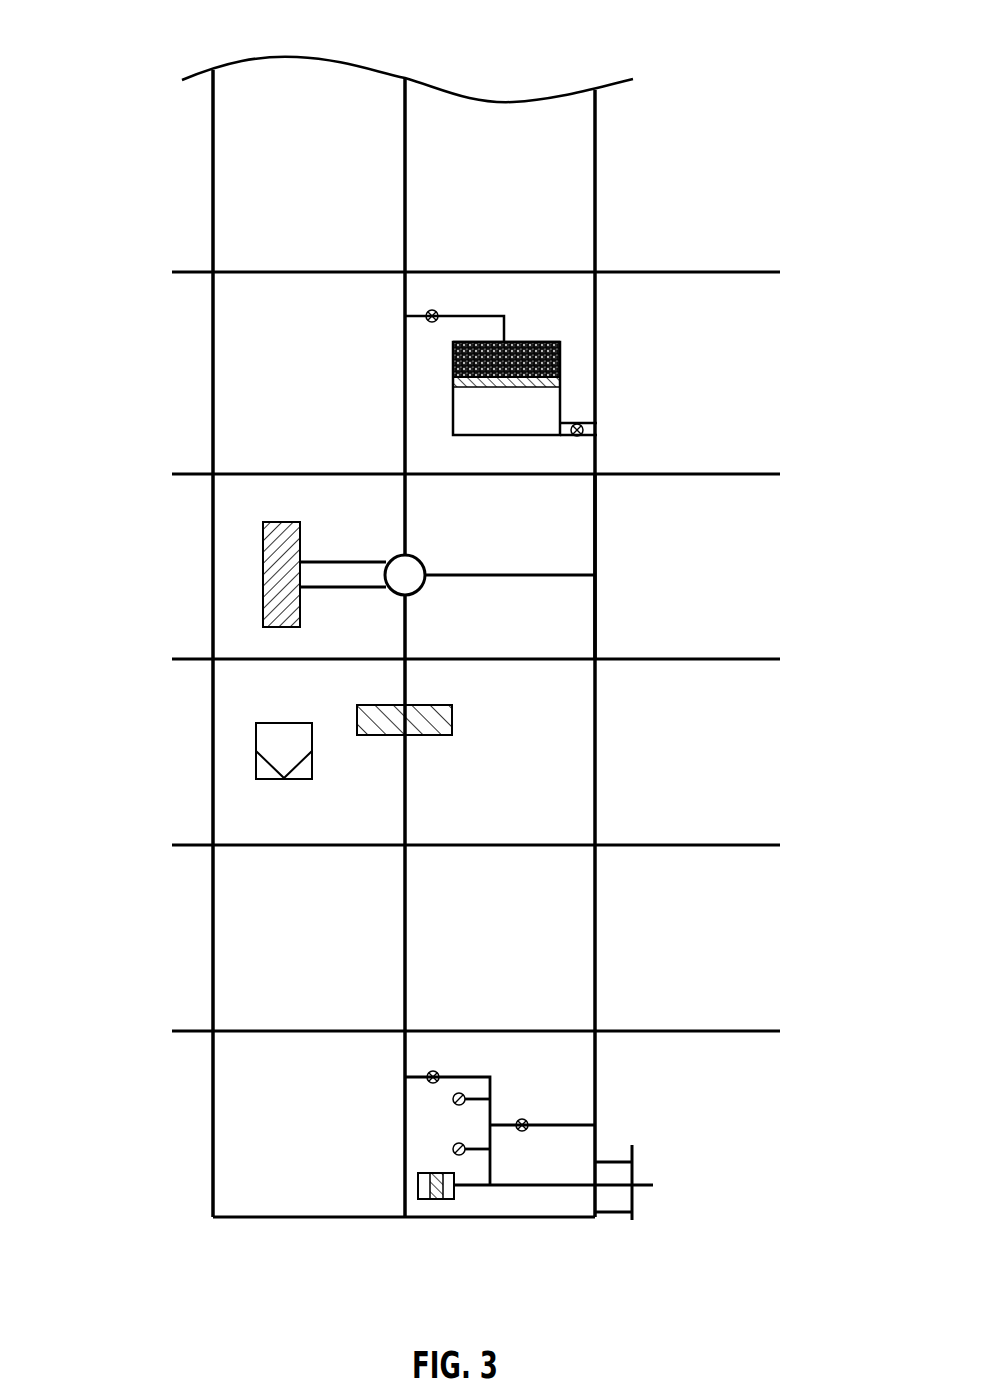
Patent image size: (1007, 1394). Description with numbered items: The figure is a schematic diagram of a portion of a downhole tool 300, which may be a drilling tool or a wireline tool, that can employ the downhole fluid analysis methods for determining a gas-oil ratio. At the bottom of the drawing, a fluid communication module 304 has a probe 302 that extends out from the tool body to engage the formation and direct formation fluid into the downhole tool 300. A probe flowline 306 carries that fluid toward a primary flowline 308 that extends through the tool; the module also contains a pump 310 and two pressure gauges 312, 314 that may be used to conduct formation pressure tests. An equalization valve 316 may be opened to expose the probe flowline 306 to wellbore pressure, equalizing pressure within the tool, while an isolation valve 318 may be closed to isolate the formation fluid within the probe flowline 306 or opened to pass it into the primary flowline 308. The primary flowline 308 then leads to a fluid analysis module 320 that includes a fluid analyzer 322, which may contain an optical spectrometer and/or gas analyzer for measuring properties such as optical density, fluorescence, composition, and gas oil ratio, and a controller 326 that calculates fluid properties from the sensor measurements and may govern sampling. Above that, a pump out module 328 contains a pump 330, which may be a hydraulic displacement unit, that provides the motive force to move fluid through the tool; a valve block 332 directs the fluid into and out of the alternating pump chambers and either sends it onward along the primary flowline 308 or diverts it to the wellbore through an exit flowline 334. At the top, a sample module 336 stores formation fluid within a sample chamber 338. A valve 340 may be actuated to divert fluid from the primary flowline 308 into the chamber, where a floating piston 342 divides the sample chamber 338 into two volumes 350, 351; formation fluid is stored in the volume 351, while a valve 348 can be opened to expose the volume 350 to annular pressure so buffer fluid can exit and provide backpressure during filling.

The downhole tool 300 is at (146, 36).
The probe 302 is at (636, 1172).
The fluid communication module 304 is at (212, 1133).
The probe flowline 306 is at (516, 1188).
The primary flowline 308 is at (403, 942).
The pump 310 is at (434, 1200).
The pressure gauge 312 is at (452, 1152).
The pressure gauge 314 is at (452, 1102).
The equalization valve 316 is at (524, 1119).
The isolation valve 318 is at (436, 1071).
The fluid analysis module 320 is at (598, 752).
The fluid analyzer 322 is at (452, 718).
The controller 326 is at (256, 742).
The pump out module 328 is at (598, 528).
The pump 330 is at (262, 578).
The valve block 332 is at (420, 562).
The exit flowline 334 is at (497, 578).
The sample module 336 is at (212, 362).
The sample chamber 338 is at (562, 398).
The valve 340 is at (436, 311).
The floating piston 342 is at (562, 380).
The valve 348 is at (577, 423).
The volume 350 is at (507, 413).
The volume 351 is at (522, 342).